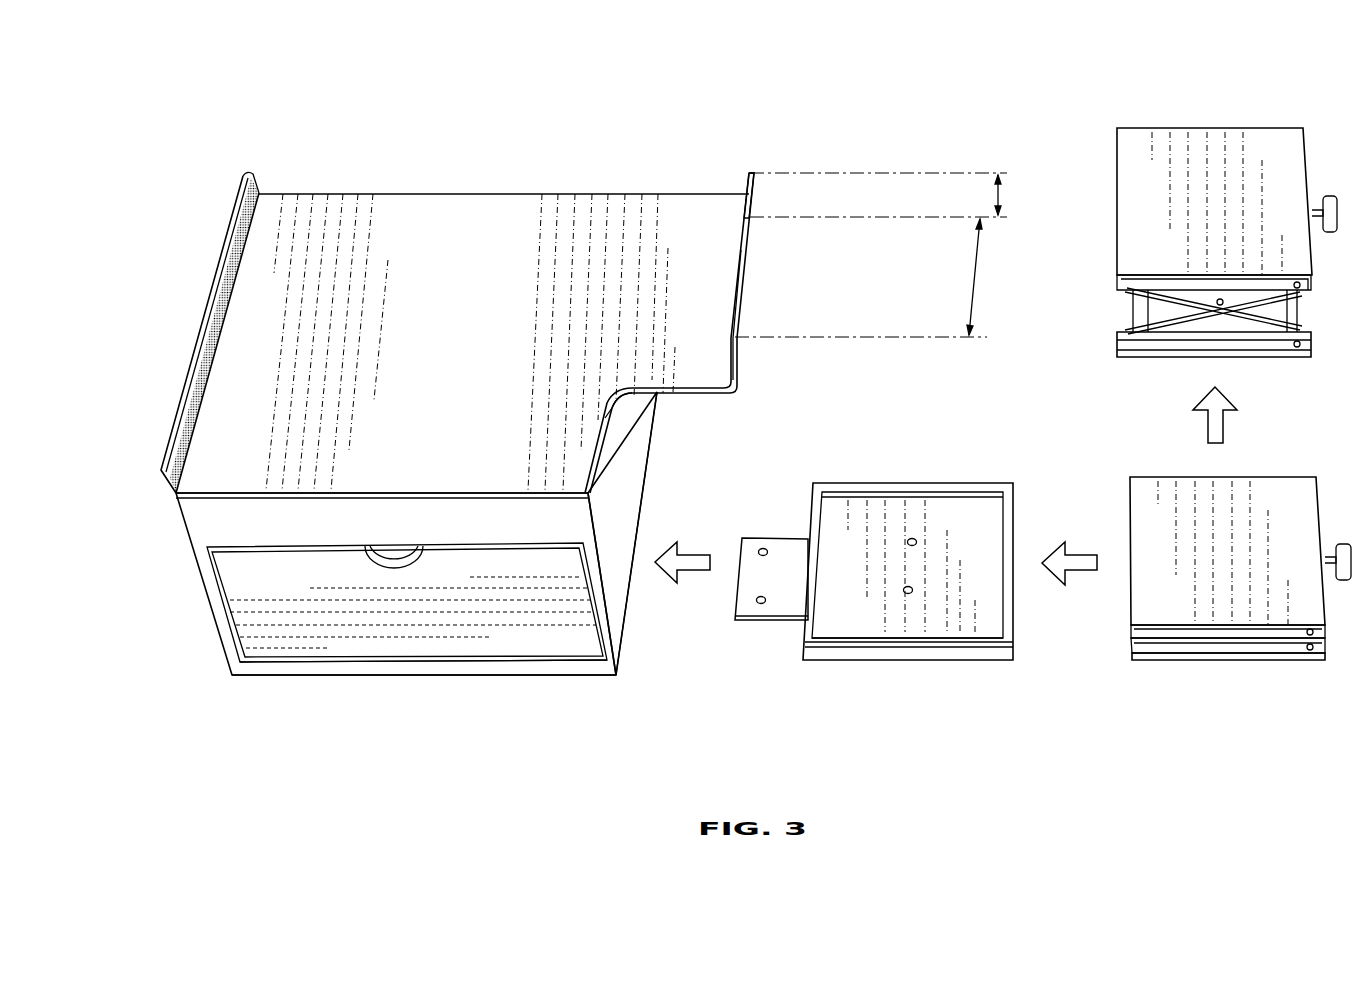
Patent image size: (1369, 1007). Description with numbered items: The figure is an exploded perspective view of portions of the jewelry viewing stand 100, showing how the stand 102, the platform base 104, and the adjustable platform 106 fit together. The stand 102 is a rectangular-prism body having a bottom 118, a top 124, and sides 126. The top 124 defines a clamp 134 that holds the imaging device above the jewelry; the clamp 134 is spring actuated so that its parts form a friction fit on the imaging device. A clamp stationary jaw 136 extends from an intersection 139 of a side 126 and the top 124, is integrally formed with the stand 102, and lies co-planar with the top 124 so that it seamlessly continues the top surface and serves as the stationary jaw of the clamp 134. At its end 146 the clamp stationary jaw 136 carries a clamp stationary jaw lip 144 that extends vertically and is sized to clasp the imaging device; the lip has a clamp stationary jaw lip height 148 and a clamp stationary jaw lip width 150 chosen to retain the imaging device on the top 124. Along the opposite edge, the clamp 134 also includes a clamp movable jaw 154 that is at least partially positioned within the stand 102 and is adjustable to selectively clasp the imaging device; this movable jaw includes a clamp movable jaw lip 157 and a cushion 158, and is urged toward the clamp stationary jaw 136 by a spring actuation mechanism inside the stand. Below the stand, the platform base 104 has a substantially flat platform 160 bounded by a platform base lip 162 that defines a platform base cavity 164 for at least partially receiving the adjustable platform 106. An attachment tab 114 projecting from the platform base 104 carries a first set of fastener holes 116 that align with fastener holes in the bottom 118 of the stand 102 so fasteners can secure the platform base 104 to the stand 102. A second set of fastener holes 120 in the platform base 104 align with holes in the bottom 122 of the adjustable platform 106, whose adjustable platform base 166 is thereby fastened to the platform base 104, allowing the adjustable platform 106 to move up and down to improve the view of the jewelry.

The jewelry viewing stand 100 is at (558, 146).
The stand 102 is at (212, 533).
The platform base 104 is at (822, 652).
The adjustable platform 106 is at (1272, 137).
The attachment tab 114 is at (780, 608).
The first set of fastener holes 116 is at (756, 600).
The bottom 118 is at (328, 677).
The second set of fastener holes 120 is at (905, 594).
The bottom 122 is at (1170, 657).
The top 124 is at (302, 210).
The sides 126 is at (230, 505).
The clamp 134 is at (247, 257).
The clamp stationary jaw 136 is at (747, 273).
The intersection 139 is at (613, 402).
The clamp stationary jaw lip 144 is at (748, 222).
The end 146 is at (733, 287).
The clamp stationary jaw lip height 148 is at (1002, 197).
The clamp stationary jaw lip width 150 is at (977, 263).
The clamp movable jaw 154 is at (210, 283).
The clamp movable jaw lip 157 is at (188, 367).
The cushion 158 is at (205, 325).
The substantially flat platform 160 is at (950, 623).
The platform base lip 162 is at (995, 642).
The platform base cavity 164 is at (983, 522).
The adjustable platform base 166 is at (1252, 647).